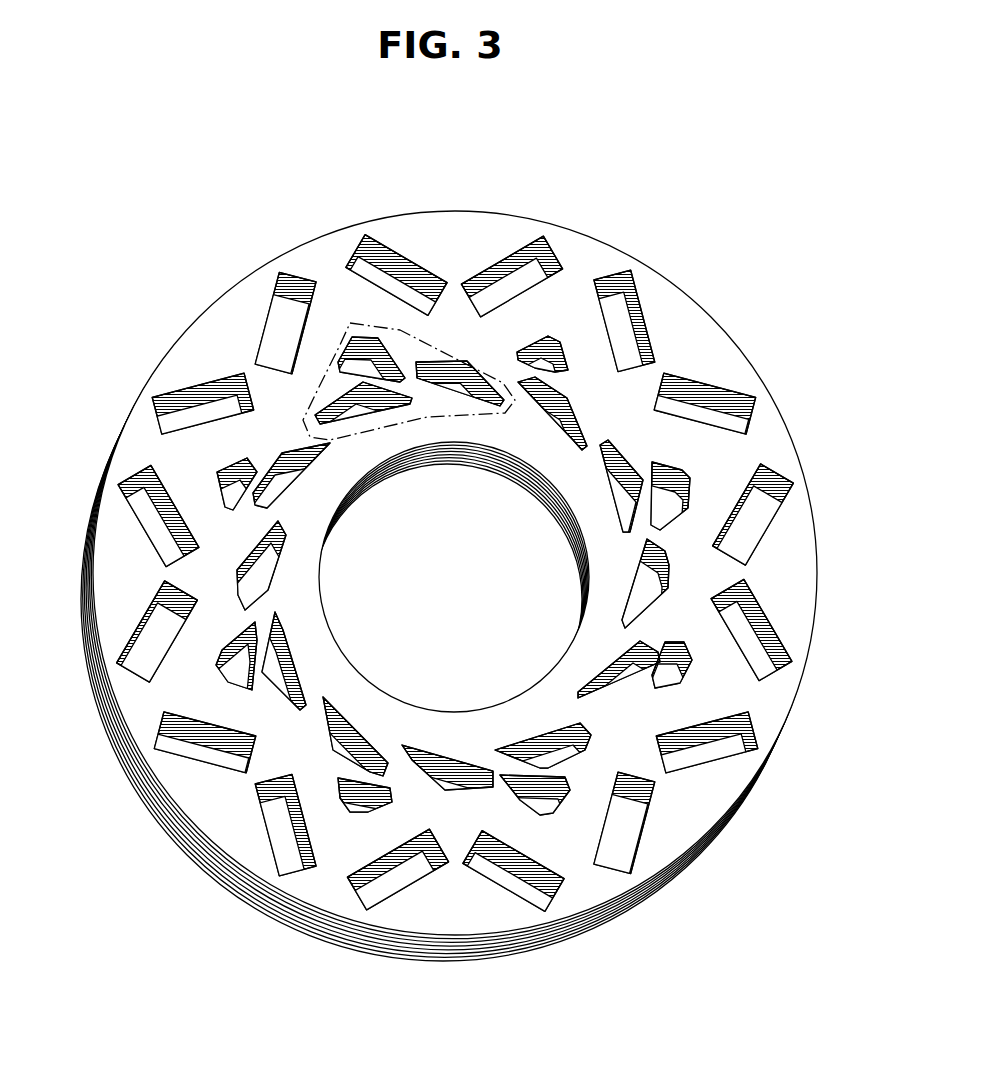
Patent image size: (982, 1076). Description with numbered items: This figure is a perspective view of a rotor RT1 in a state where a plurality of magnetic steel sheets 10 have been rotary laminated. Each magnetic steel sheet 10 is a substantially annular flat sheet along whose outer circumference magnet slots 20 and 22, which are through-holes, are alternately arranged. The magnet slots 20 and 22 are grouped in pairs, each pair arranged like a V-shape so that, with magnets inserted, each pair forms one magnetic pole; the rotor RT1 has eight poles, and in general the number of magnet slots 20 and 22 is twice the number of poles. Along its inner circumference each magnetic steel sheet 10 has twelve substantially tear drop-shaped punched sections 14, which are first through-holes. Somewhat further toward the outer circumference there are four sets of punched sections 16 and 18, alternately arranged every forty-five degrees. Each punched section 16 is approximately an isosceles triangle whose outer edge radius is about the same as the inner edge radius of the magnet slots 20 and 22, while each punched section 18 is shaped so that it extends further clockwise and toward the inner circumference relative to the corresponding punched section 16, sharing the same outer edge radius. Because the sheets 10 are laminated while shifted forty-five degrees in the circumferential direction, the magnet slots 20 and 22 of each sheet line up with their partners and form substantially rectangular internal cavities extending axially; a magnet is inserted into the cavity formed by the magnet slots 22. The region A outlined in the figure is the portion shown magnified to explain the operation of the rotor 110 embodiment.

The rotor RT1 is at (460, 558).
The rotor 110 is at (198, 266).
The magnetic steel sheet 10 is at (447, 246).
The magnet slot 20 is at (538, 234).
The magnet slot 22 is at (628, 306).
The punched section (first through-hole) 14 is at (618, 446).
The punched section (third through-hole) 18 is at (670, 462).
The punched section (second through-hole) 16 is at (674, 661).
The region A is at (356, 323).